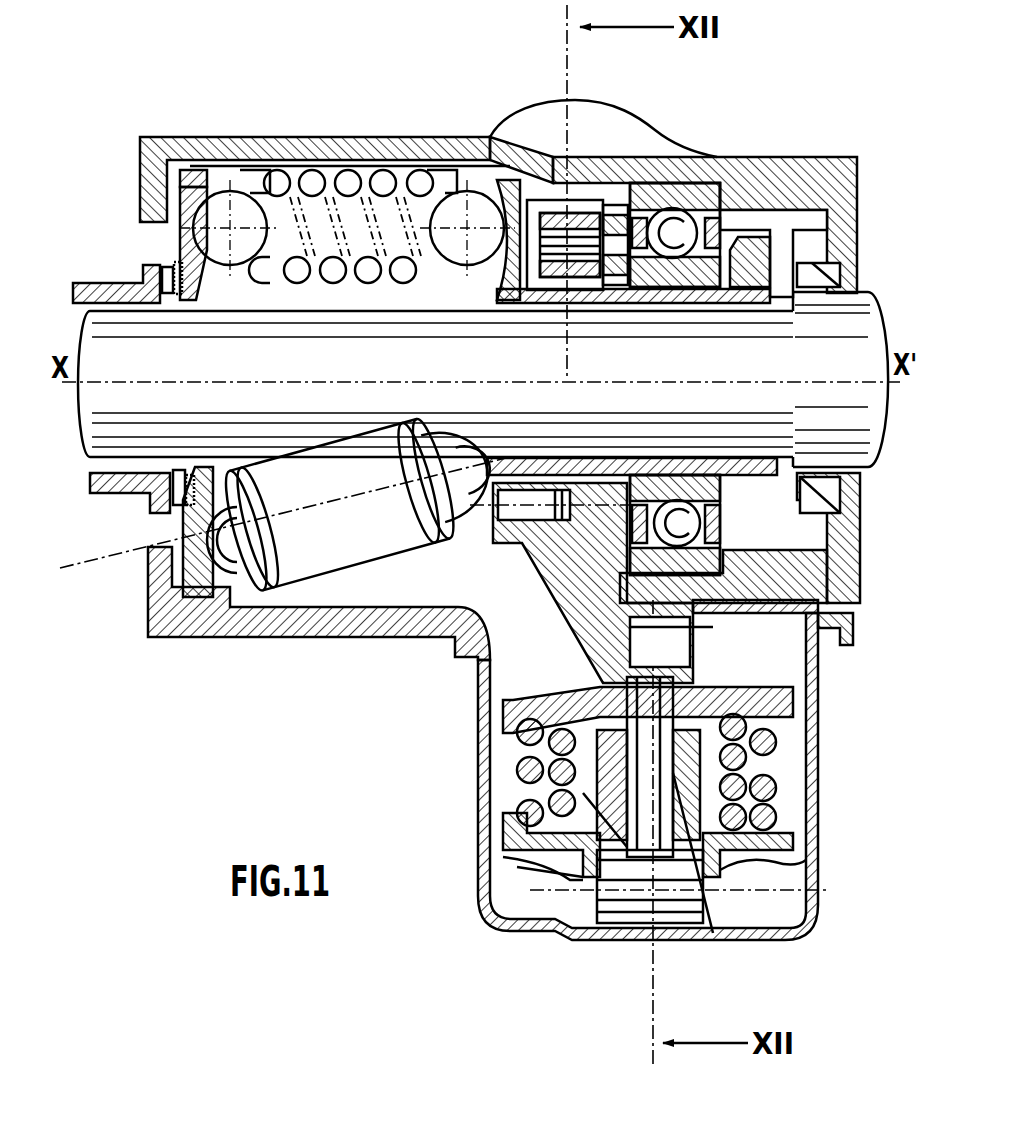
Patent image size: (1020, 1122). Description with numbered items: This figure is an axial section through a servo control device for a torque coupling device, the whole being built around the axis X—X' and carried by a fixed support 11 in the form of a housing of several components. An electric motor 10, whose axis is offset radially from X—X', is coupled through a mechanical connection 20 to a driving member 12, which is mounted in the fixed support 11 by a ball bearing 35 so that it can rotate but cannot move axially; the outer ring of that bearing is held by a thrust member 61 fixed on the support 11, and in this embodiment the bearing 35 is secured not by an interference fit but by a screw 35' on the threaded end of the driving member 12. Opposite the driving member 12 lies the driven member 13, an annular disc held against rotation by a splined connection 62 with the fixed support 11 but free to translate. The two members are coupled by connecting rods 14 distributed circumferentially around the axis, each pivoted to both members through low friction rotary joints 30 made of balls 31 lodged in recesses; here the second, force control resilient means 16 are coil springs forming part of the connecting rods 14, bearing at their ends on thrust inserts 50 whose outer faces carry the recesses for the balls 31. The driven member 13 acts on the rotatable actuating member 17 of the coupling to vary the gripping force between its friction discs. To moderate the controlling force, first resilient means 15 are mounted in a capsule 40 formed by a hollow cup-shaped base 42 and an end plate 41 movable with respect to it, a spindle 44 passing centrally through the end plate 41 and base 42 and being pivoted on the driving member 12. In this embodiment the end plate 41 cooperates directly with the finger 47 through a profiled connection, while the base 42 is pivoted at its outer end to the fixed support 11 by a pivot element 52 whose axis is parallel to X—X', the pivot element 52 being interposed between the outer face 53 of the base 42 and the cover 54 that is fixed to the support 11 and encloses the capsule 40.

The electric motor 10 is at (652, 128).
The fixed support 11 is at (266, 645).
The driving member 12 is at (507, 303).
The driven member 13 is at (166, 234).
The connecting rods 14 is at (340, 180).
The first resilient means 15 is at (512, 785).
The second resilient means 16 is at (372, 180).
The rotatable actuating member 17 is at (140, 493).
The mechanical connection 20 is at (589, 186).
The low friction rotary joints 30 is at (245, 190).
The balls 31 is at (480, 172).
The ball bearing 35 is at (701, 199).
The screw 35' is at (783, 199).
The capsule 40 is at (500, 731).
The end plate 41 is at (717, 687).
The hollow cup-shaped base 42 is at (750, 860).
The spindle 44 is at (733, 933).
The finger 47 is at (605, 652).
The thrust inserts 50 is at (438, 168).
The pivot element 52 is at (623, 905).
The outer face 53 is at (523, 860).
The cover 54 is at (520, 925).
The thrust member 61 is at (853, 582).
The splined connection 62 is at (240, 188).